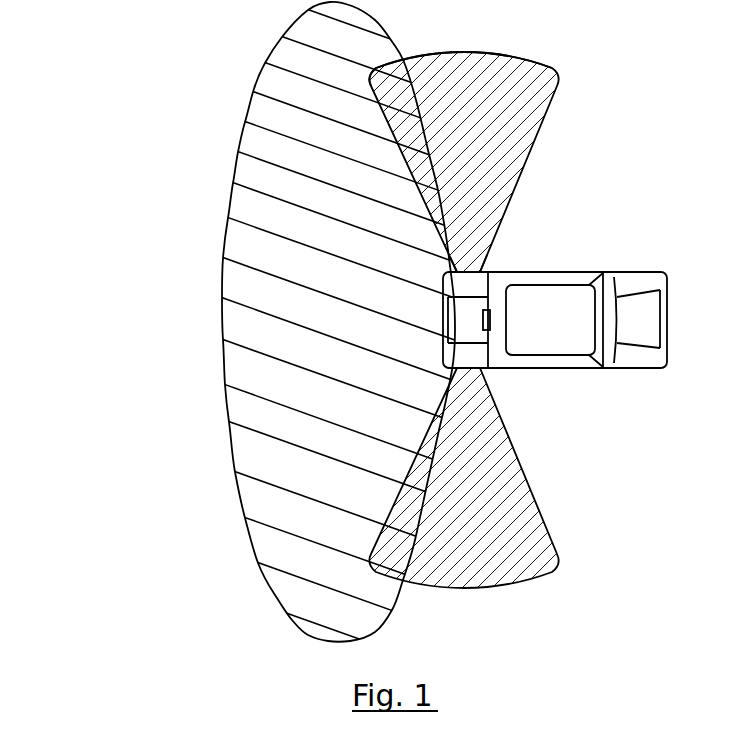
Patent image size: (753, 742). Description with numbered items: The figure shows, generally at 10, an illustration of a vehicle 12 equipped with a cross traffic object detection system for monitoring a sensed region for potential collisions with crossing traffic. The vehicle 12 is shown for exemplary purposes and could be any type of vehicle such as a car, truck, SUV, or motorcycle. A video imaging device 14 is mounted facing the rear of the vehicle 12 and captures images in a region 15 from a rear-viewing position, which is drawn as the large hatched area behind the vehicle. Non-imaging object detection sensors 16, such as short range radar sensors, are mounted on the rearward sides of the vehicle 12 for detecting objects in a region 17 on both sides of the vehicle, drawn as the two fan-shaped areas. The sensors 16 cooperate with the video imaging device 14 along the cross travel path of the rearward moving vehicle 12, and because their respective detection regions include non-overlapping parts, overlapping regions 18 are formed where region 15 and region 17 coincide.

The cross traffic object detection system illustration 10 is at (163, 130).
The vehicle 12 is at (560, 272).
The video imaging device 14 is at (490, 320).
The region 15 is at (238, 413).
The non-imaging object detection sensors 16 is at (472, 270).
The region 17 is at (526, 125).
The overlapping regions 18 is at (402, 56).